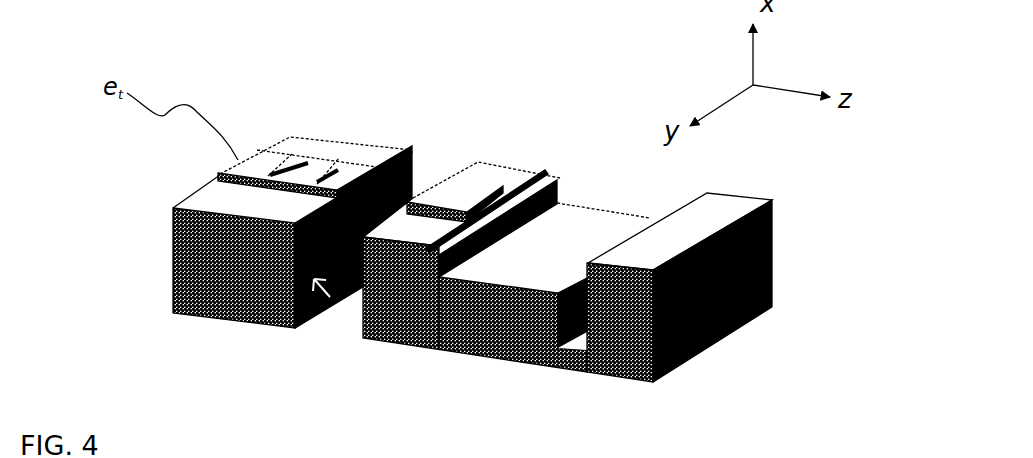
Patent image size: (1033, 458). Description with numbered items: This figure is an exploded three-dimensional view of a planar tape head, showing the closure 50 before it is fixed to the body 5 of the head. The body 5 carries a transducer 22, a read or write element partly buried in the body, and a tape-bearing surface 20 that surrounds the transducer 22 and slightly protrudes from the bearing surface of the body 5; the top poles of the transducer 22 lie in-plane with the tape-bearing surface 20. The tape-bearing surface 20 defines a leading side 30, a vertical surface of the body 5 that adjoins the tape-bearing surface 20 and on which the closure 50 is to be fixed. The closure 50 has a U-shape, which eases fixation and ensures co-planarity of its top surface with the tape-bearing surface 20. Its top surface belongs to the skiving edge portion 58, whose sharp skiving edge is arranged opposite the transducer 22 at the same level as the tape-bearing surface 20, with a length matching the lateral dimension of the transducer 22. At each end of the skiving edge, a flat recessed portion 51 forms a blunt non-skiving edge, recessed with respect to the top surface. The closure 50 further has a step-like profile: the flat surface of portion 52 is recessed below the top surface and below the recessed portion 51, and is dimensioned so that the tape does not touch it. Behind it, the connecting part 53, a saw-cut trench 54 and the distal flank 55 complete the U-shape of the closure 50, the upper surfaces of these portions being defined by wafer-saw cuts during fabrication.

The body 5 is at (242, 201).
The tape-bearing surface 20 is at (317, 133).
The transducer 22 is at (272, 143).
The leading side 30 is at (334, 310).
The closure 50 is at (595, 281).
The recessed portion 51 is at (462, 259).
The portion 52 is at (520, 286).
The connecting part 53 is at (495, 268).
The trench 54 is at (570, 372).
The distal flank 55 is at (719, 270).
The skiving edge portion 58 is at (472, 170).